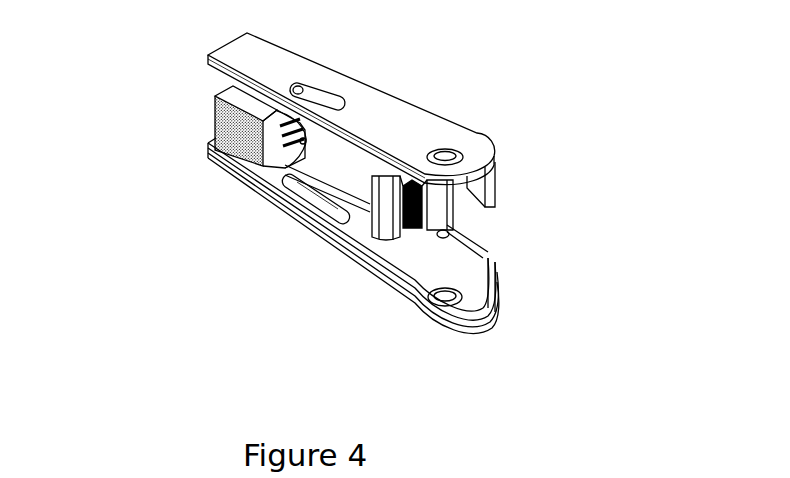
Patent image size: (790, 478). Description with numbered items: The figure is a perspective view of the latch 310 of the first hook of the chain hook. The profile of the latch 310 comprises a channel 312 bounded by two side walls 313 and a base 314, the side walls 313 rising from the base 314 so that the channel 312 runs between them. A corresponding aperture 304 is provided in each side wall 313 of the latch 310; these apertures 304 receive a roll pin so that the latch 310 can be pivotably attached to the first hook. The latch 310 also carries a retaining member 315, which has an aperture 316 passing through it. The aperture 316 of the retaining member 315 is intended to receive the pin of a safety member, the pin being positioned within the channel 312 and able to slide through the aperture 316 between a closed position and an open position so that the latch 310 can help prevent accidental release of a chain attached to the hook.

The latch 310 is at (522, 66).
The channel 312 is at (335, 169).
The side walls 313 is at (377, 112).
The base 314 is at (498, 182).
The retaining member 315 is at (232, 115).
The aperture 316 is at (215, 163).
The aperture 304 is at (445, 298).